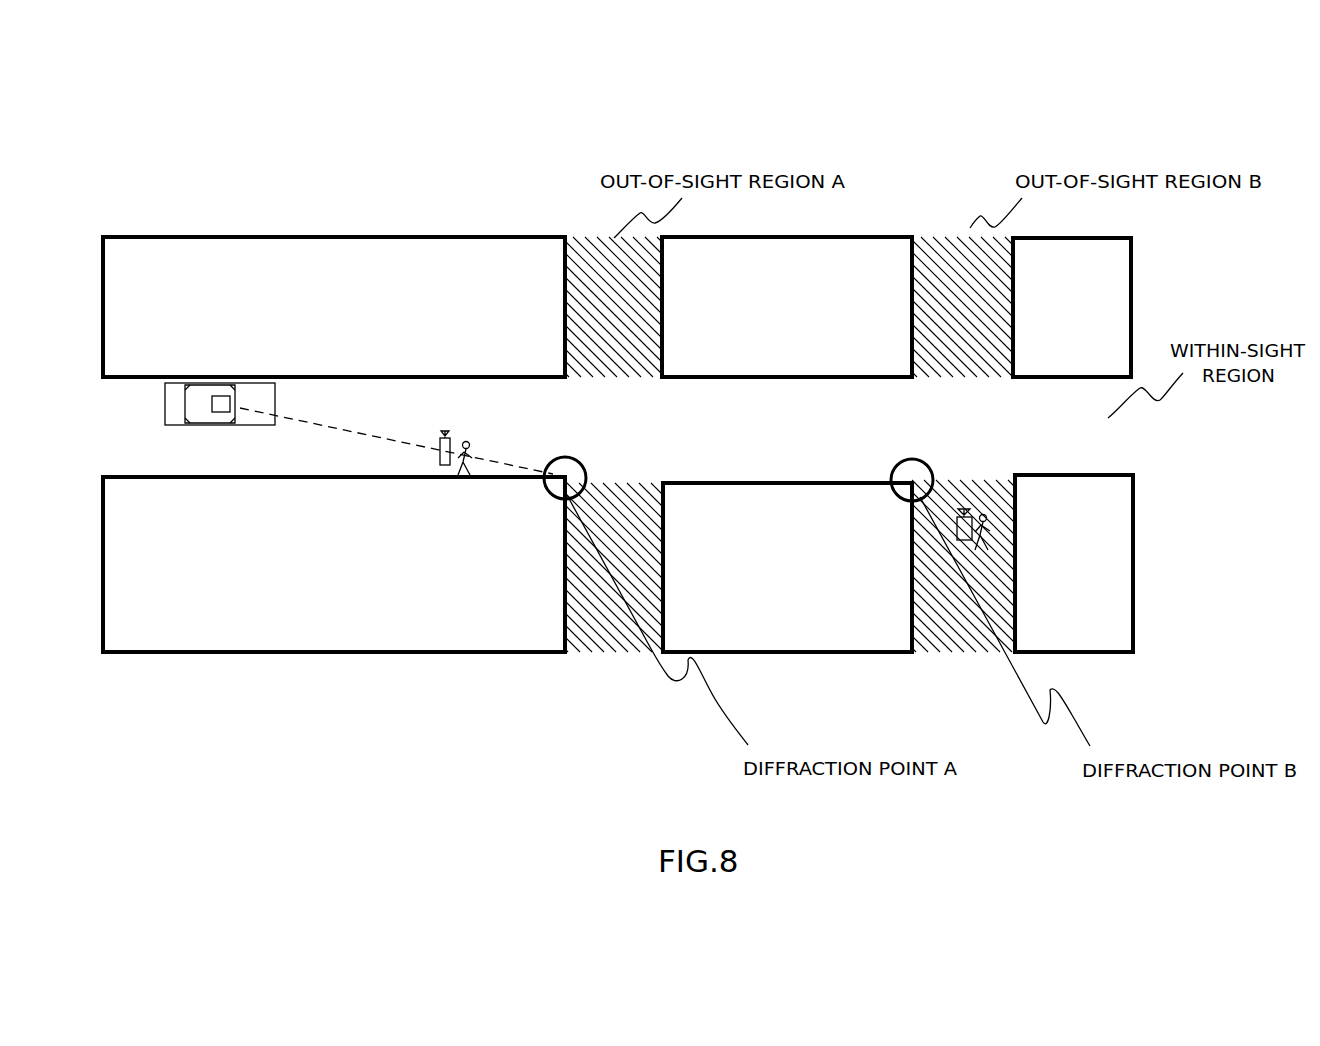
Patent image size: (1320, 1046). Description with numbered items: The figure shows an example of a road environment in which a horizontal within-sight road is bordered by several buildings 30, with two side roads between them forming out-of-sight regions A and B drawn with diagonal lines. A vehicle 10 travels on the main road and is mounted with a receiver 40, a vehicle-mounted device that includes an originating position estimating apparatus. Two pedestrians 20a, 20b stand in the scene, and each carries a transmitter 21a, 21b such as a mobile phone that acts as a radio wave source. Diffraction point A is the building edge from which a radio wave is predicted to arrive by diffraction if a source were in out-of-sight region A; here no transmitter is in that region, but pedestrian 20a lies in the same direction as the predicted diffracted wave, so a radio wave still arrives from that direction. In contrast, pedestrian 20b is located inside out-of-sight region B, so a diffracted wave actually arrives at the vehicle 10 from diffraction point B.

The building 30 is at (145, 237).
The vehicle 10 is at (218, 383).
The receiver (vehicle-mounted device) 40 is at (230, 396).
The pedestrian 20a is at (458, 480).
The pedestrian 20b is at (1000, 523).
The transmitter 21a is at (449, 438).
The transmitter 21b is at (960, 506).